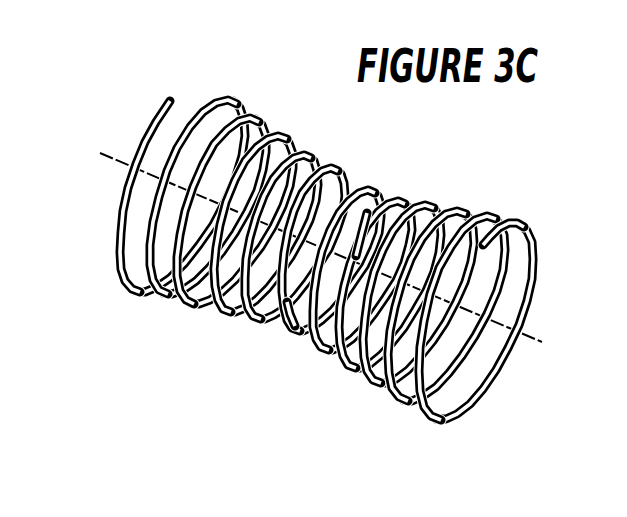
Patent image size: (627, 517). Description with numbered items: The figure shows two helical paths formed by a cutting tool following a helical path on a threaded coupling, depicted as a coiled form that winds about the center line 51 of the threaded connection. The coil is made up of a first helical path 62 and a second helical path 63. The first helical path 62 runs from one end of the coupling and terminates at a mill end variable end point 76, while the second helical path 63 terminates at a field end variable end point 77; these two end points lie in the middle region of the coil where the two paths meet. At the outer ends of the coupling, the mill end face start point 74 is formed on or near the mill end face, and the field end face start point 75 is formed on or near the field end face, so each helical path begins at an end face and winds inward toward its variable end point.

The center line 51 is at (126, 160).
The first helical path 62 is at (133, 294).
The second helical path 63 is at (447, 421).
The mill end face start point 74 is at (179, 101).
The field end face start point 75 is at (494, 248).
The mill end variable end point 76 is at (369, 211).
The field end variable end point 77 is at (288, 300).